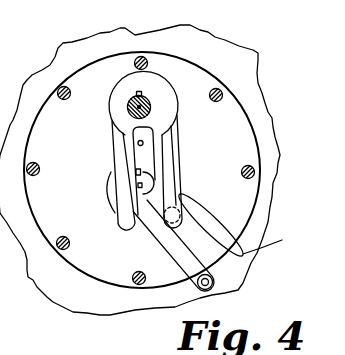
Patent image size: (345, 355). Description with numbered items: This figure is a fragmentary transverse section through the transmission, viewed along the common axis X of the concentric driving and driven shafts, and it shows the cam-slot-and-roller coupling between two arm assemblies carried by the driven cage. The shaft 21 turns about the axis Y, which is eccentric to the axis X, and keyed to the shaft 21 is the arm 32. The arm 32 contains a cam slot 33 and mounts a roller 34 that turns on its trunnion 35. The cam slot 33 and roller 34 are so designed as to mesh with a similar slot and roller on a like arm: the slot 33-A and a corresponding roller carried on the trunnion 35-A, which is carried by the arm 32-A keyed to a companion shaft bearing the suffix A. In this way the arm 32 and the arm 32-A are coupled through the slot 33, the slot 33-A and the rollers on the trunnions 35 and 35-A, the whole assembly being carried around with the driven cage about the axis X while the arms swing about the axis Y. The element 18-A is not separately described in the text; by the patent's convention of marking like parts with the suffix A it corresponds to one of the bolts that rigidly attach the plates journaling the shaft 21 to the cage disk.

The housing plate 18-A is at (219, 92).
The shaft 21 is at (148, 96).
The arm 32 is at (109, 105).
The arm 32-A is at (186, 193).
The cam slot 33 is at (134, 154).
The slot 33-A is at (282, 240).
The roller 34 is at (165, 247).
The trunnion 35 is at (179, 217).
The trunnion 35-A is at (213, 283).
The common axis X is at (144, 143).
The axis Y is at (151, 107).